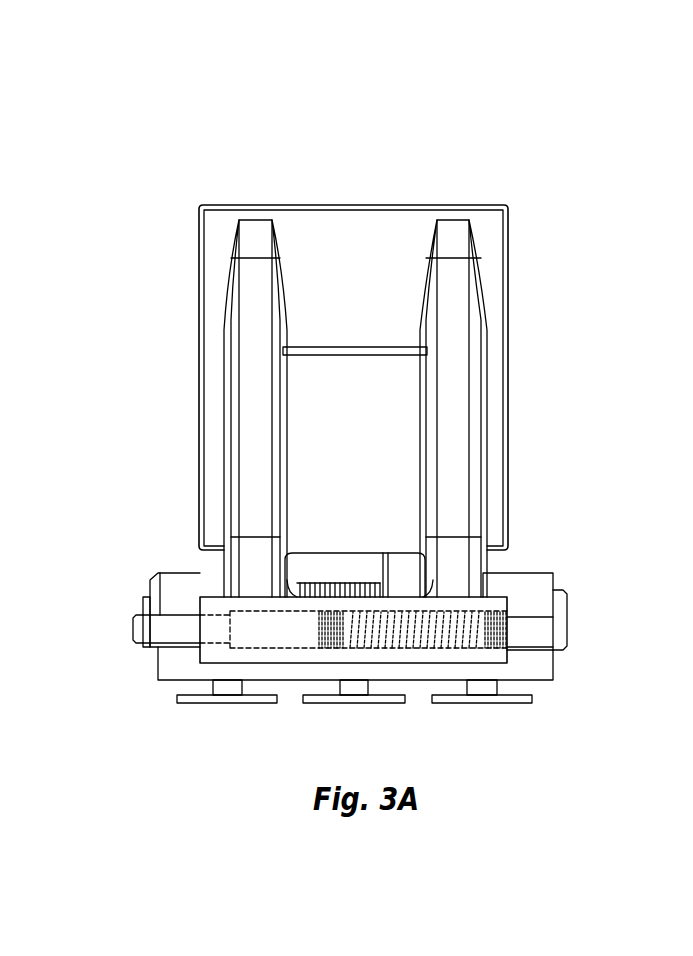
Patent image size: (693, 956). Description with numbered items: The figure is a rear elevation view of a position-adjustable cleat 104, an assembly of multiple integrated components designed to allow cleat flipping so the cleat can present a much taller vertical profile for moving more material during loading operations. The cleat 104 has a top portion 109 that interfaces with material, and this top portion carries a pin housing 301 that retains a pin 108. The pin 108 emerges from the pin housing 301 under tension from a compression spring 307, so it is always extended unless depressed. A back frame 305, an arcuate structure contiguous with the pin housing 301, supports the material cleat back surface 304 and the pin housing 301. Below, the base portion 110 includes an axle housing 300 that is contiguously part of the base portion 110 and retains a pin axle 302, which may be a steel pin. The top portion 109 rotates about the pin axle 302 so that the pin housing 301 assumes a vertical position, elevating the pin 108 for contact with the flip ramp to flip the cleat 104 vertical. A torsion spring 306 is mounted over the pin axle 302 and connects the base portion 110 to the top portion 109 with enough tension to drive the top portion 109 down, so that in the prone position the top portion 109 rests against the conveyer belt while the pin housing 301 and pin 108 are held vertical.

The position-adjustable cleat 104 is at (313, 133).
The top portion 109 is at (508, 293).
The material cleat back surface 304 is at (358, 388).
The back frame 305 is at (450, 455).
The torsion spring 306 is at (362, 583).
The pin 108 is at (165, 630).
The compression spring 307 is at (437, 612).
The axle housing 300 is at (168, 572).
The pin housing 301 is at (493, 577).
The base portion 110 is at (177, 697).
The pin axle 302 is at (567, 620).